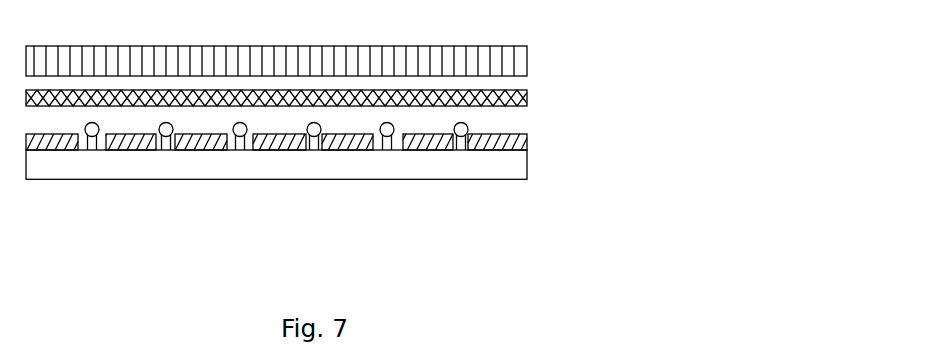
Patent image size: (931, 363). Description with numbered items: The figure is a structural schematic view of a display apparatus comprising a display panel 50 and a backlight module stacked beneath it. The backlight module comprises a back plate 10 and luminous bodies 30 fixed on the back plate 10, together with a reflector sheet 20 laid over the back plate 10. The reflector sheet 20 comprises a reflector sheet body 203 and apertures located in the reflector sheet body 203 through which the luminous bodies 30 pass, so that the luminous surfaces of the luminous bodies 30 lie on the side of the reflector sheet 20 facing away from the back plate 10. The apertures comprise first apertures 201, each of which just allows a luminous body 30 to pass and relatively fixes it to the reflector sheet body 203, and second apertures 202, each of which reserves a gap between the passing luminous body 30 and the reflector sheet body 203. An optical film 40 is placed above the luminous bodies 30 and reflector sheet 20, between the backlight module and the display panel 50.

The back plate 10 is at (527, 163).
The reflector sheet 20 is at (276, 198).
The first apertures 201 is at (347, 177).
The second apertures 202 is at (254, 148).
The reflector sheet body 203 is at (137, 148).
The luminous body 30 is at (468, 128).
The optical film 40 is at (527, 95).
The display panel 50 is at (527, 59).